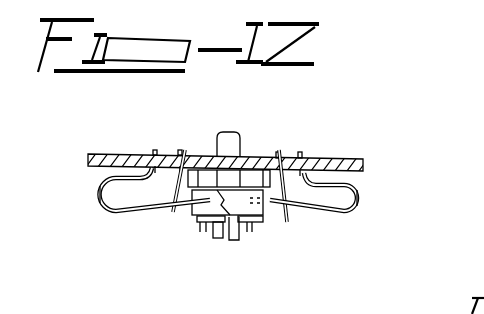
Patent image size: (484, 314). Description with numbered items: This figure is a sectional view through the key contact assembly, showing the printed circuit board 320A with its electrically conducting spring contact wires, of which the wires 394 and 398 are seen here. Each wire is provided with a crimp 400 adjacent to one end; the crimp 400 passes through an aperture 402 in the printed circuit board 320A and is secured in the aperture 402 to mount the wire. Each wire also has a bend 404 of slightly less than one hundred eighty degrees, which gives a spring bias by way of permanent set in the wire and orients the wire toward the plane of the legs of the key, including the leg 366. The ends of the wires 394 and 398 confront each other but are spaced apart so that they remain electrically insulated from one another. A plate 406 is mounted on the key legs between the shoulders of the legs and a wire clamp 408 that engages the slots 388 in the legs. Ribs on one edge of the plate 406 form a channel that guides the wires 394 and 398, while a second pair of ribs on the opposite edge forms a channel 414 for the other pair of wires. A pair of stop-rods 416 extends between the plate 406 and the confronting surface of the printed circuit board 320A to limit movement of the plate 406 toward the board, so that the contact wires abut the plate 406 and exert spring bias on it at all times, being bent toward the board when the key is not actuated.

The printed circuit board 320A is at (97, 155).
The aperture 402 is at (156, 150).
The channel 414 is at (176, 152).
The stop-rods 416 is at (194, 153).
The leg 366 is at (228, 132).
The crimp 400 is at (326, 158).
The bend 404 is at (99, 193).
The spring wire 394 is at (113, 208).
The spring wire 398 is at (333, 215).
The wire clamp 408 is at (204, 222).
The plate 406 is at (251, 225).
The slots 388 is at (218, 238).